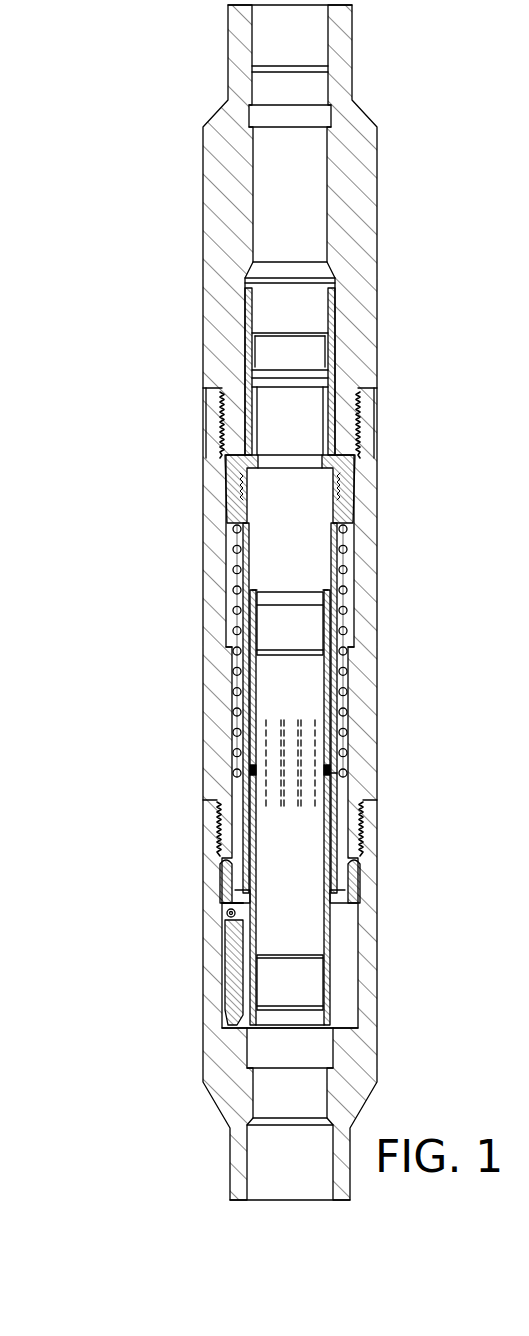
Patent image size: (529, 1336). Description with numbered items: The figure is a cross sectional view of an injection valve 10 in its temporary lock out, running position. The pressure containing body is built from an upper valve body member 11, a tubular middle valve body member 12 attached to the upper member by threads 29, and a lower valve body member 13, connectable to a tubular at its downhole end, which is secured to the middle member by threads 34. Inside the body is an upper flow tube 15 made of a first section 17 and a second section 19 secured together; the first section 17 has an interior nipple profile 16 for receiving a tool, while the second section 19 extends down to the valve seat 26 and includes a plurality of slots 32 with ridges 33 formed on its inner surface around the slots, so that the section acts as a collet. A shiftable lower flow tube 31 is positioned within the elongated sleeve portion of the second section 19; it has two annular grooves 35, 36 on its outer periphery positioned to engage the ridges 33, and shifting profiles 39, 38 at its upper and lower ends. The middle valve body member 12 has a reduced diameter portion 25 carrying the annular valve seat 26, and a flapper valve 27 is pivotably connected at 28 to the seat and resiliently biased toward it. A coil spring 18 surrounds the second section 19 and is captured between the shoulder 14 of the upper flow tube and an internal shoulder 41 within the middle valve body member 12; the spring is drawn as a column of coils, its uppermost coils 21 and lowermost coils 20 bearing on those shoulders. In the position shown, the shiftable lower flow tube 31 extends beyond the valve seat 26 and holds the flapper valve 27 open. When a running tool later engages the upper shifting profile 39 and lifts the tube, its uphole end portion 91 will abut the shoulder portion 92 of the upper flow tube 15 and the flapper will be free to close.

The injection valve 10 is at (143, 1081).
The upper valve body member 11 is at (203, 195).
The tubular middle valve body member 12 is at (203, 612).
The lower valve body member 13 is at (205, 1052).
The shoulder 14 is at (233, 527).
The upper flow tube 15 is at (228, 490).
The interior nipple profile 16 is at (253, 347).
The first section 17 is at (250, 413).
The coil spring 18 is at (235, 627).
The second section 19 is at (328, 545).
The spring lower end 20 is at (240, 773).
The spring 21 is at (235, 660).
The reduced diameter portion 25 is at (235, 843).
The annular valve seat 26 is at (225, 895).
The flapper valve 27 is at (232, 975).
The pivot connection 28 is at (228, 915).
The threads 29 is at (360, 428).
The shiftable lower flow tube 31 is at (335, 905).
The slots 32 is at (314, 808).
The ridges 33 is at (330, 770).
The threads 34 is at (218, 824).
The annular groove 35 is at (258, 768).
The annular groove 36 is at (245, 893).
The shifting profile 38 is at (325, 980).
The upper shifting profile 39 is at (328, 623).
The internal shoulder 41 is at (335, 775).
The uphole end portion 91 is at (253, 590).
The shoulder portion 92 is at (262, 472).